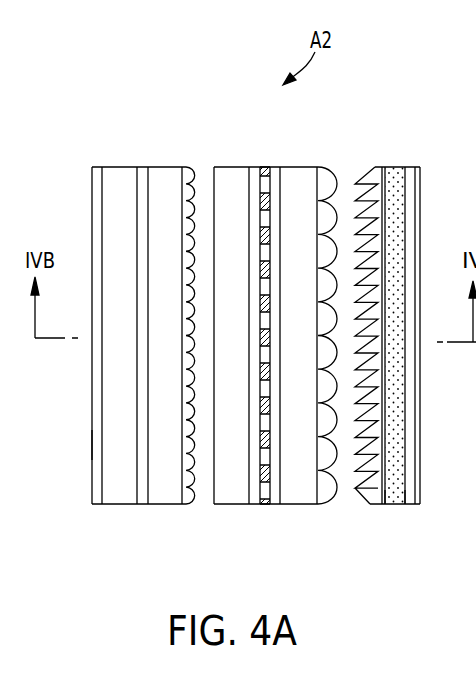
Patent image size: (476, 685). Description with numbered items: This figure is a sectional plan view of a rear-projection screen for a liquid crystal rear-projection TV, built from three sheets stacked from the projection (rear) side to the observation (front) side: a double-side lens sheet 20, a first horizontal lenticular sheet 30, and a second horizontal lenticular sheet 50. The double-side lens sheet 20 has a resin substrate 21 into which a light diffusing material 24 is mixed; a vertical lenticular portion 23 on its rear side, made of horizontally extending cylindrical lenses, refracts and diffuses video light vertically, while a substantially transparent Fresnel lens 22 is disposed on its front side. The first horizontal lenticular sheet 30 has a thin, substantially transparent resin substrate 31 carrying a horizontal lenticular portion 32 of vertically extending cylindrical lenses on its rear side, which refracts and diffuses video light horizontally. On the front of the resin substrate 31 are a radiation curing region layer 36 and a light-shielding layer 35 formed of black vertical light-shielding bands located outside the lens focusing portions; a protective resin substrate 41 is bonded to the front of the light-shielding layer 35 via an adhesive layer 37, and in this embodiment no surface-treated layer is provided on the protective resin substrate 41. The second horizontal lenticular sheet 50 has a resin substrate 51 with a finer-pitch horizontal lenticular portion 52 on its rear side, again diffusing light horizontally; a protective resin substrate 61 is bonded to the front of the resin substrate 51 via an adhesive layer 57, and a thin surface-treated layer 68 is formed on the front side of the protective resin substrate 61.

The double-side lens sheet 20 is at (405, 332).
The resin substrate 21 is at (400, 506).
The Fresnel lens 22 is at (372, 504).
The vertical lenticular portion 23 is at (410, 445).
The light diffusing material 24 is at (402, 483).
The first horizontal lenticular sheet 30 is at (286, 341).
The resin substrate 31 is at (298, 500).
The horizontal lenticular portion 32 is at (322, 500).
The light-shielding layer 35 is at (248, 500).
The radiation curing region layer 36 is at (277, 502).
The adhesive layer 37 is at (257, 497).
The protective resin substrate 41 is at (228, 500).
The second horizontal lenticular sheet 50 is at (115, 332).
The resin substrate 51 is at (160, 500).
The horizontal lenticular portion 52 is at (182, 500).
The adhesive layer 57 is at (132, 502).
The protective resin substrate 61 is at (113, 500).
The surface-treated layer 68 is at (92, 448).